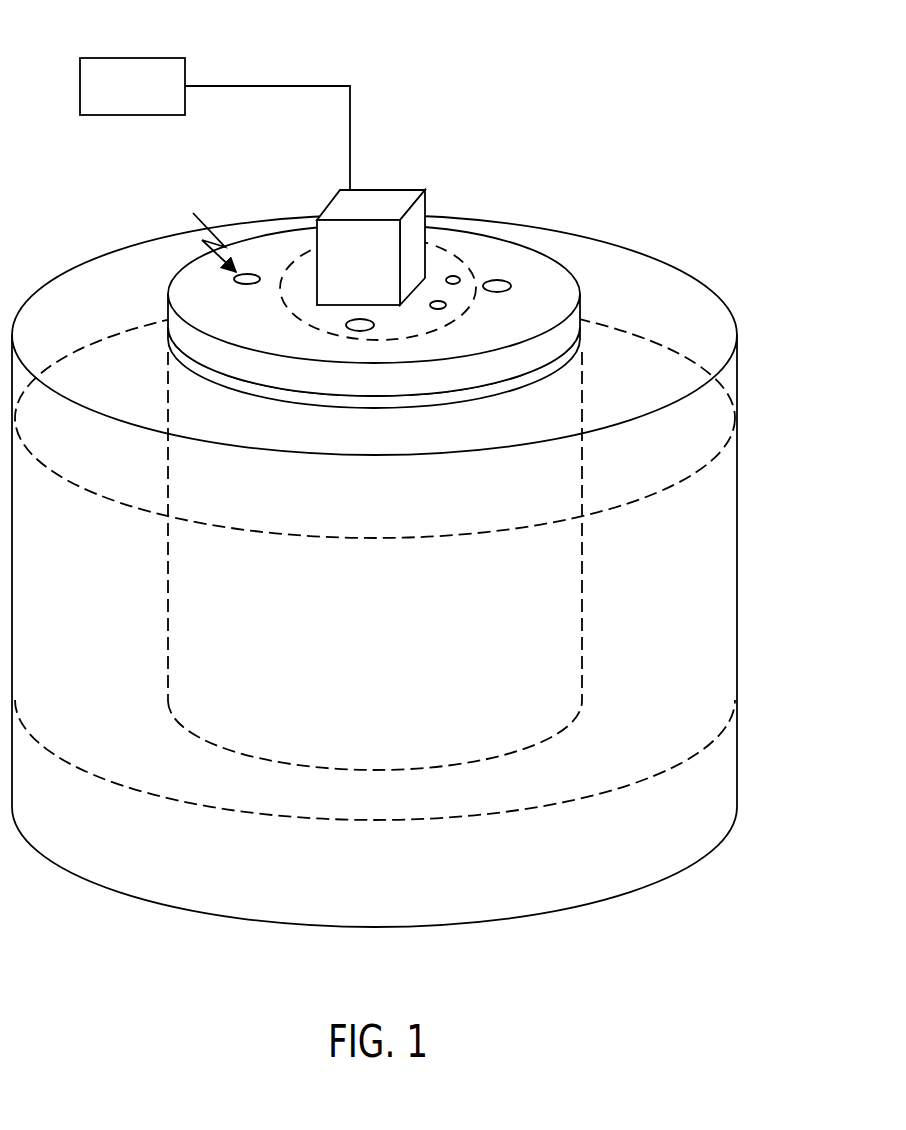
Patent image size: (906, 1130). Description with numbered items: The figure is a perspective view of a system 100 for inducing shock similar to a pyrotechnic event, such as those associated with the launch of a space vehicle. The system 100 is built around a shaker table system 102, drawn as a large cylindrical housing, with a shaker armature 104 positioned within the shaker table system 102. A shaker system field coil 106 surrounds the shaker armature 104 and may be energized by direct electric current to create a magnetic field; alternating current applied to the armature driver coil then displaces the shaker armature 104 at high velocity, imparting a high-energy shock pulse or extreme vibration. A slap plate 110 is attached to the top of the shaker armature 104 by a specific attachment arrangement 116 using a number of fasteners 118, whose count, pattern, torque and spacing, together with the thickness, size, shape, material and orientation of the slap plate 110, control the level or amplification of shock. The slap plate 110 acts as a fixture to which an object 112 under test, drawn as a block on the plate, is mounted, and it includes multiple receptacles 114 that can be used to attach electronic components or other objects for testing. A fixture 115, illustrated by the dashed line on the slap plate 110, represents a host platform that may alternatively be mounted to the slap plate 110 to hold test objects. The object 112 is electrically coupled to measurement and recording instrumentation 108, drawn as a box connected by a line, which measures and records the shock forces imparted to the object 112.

The system 100 is at (667, 237).
The shaker table system 102 is at (100, 269).
The shaker armature 104 is at (567, 381).
The shaker system field coil 106 is at (737, 623).
The measurement and recording instrumentation 108 is at (133, 62).
The slap plate 110 is at (557, 272).
The object 112 is at (376, 198).
The receptacles 114 is at (470, 252).
The fixture 115 is at (482, 319).
The specific attachment arrangement 116 is at (196, 231).
The fasteners 118 is at (249, 273).